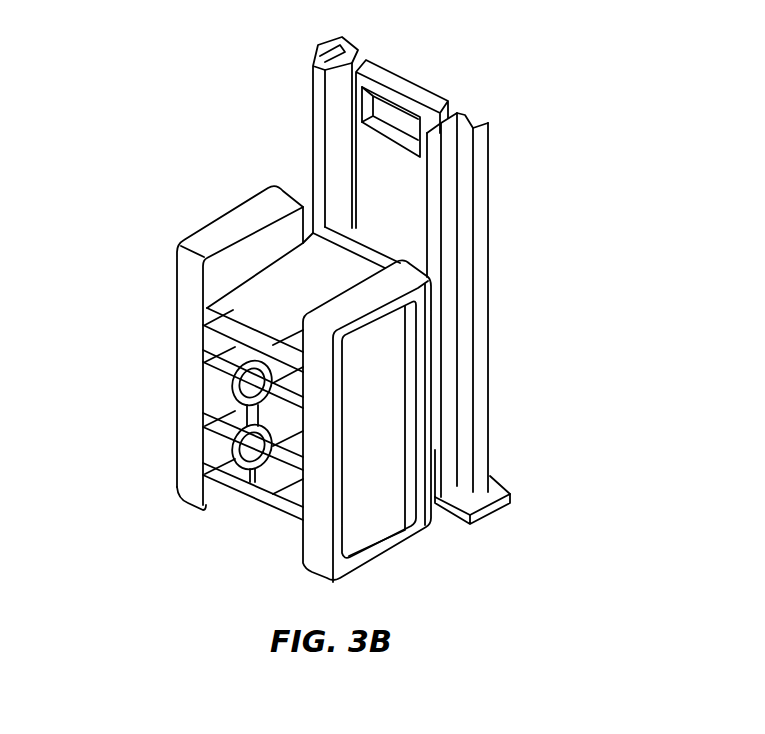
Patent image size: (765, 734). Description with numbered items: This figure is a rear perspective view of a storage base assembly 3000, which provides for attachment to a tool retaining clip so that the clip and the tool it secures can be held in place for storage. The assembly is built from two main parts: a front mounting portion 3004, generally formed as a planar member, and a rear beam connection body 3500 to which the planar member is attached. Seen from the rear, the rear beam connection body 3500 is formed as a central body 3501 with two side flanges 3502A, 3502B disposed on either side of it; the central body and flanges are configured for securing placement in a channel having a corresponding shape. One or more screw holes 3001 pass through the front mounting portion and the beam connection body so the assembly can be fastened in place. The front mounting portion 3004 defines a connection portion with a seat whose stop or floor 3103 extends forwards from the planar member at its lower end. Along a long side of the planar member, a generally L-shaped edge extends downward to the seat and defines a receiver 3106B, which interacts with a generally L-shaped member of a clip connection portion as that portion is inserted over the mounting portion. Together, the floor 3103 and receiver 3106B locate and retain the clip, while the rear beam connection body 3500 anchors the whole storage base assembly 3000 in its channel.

The rear beam connection body 3500 is at (216, 204).
The side flange 3502A is at (190, 268).
The central body 3501 is at (242, 318).
The screw hole 3001 is at (247, 486).
The side flange 3502B is at (372, 527).
The storage base assembly 3000 is at (545, 250).
The front mounting portion 3004 is at (493, 189).
The receiver 3106B is at (484, 357).
The floor 3103 is at (512, 486).